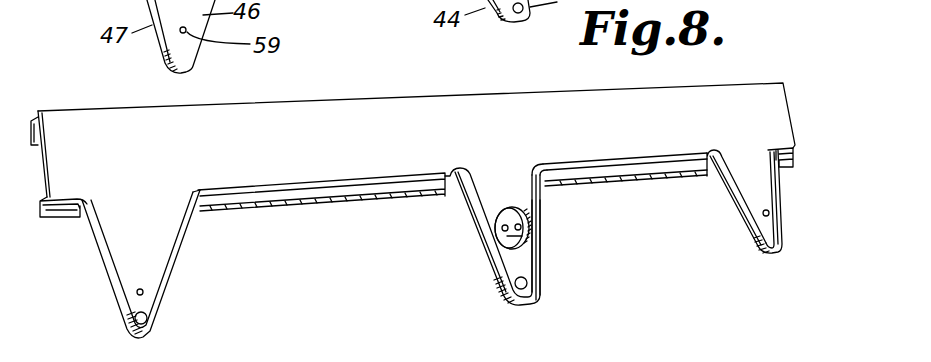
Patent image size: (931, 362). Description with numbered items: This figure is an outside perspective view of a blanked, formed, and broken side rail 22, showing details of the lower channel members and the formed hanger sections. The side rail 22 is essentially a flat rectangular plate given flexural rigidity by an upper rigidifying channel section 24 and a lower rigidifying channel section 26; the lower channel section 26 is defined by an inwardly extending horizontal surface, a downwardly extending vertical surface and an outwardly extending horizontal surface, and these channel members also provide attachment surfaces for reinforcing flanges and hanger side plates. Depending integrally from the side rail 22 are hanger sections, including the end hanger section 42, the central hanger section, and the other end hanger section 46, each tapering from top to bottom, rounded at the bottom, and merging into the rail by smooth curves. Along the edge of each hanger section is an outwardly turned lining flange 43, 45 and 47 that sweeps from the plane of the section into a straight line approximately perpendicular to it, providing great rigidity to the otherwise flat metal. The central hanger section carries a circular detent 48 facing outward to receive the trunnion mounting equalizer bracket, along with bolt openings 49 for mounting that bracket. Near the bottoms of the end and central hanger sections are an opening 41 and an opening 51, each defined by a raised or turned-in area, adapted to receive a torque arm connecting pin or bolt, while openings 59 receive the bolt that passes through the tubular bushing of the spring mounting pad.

The side rail 22 is at (408, 151).
The upper rigidifying channel section 24 is at (36, 112).
The lower rigidifying channel section 26 is at (340, 193).
The opening 41 is at (148, 318).
The end hanger section 42 is at (163, 270).
The lining flange 43 is at (168, 293).
The lining flange 45 is at (498, 276).
The end hanger section 46 is at (747, 188).
The lining flange 47 is at (527, 262).
The detent 48 is at (519, 215).
The bolt openings 49 is at (521, 228).
The opening 51 is at (527, 284).
The openings 59 is at (140, 289).